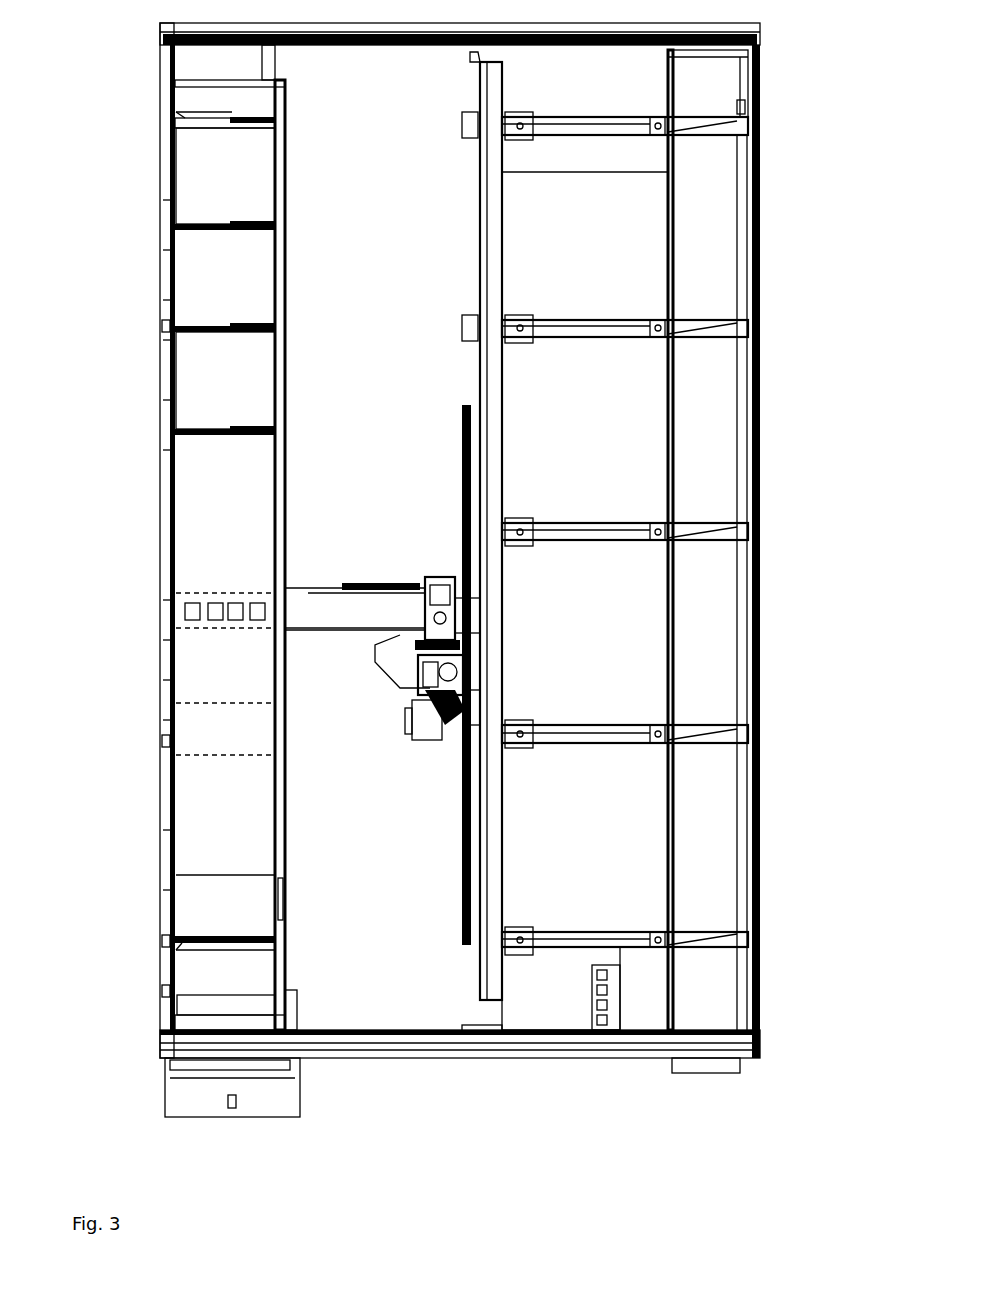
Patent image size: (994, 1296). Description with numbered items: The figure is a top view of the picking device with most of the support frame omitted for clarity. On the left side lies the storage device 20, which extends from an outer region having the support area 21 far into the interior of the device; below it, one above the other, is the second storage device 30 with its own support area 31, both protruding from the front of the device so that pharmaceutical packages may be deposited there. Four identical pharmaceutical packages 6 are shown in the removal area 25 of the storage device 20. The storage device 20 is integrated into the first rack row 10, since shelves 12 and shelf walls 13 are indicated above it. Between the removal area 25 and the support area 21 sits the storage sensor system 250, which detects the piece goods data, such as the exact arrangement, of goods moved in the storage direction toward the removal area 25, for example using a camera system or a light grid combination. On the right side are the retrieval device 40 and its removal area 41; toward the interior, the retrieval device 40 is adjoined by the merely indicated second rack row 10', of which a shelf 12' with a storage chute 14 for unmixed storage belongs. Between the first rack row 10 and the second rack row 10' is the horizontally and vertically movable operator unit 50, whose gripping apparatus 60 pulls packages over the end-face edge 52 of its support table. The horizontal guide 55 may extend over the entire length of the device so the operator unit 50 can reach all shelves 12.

The first rack row 10 is at (460, 540).
The second rack row 10' is at (574, 121).
The shelves 12 is at (169, 278).
The shelf 12' is at (645, 275).
The shelf walls 13 is at (230, 232).
The storage chute 14 is at (745, 130).
The storage device 20 is at (225, 846).
The support area 21 is at (190, 1062).
The removal area 25 is at (232, 596).
The pharmaceutical packages 6 is at (195, 613).
The storage sensor system 250 is at (225, 735).
The storage device 30 is at (282, 1100).
The support area 31 is at (255, 1080).
The retrieval device 40 is at (708, 856).
The removal area 41 is at (740, 1072).
The operator unit 50 is at (416, 770).
The end-face edge 52 is at (288, 627).
The horizontal guide 55 is at (470, 466).
The gripping apparatus 60 is at (427, 550).